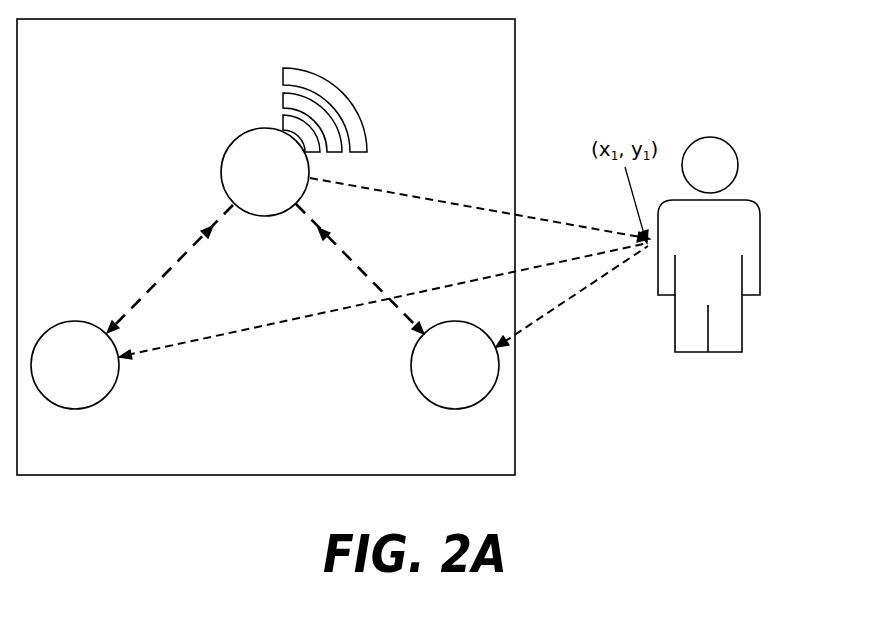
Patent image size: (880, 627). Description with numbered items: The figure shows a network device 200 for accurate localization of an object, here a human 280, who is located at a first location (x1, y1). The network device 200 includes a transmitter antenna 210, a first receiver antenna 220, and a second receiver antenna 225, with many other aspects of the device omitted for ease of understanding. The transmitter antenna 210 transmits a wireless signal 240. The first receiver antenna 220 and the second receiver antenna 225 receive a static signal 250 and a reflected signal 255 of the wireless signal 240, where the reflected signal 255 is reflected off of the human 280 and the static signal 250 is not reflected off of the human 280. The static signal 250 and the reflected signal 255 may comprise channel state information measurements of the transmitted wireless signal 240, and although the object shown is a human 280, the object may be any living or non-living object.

The network device 200 is at (57, 53).
The transmitter antenna 210 is at (250, 188).
The first receiver antenna 220 is at (60, 378).
The second receiver antenna 225 is at (440, 378).
The wireless signal 240 is at (374, 122).
The static signal 250 is at (318, 238).
The reflected signal 255 is at (598, 264).
The human 280 is at (693, 266).